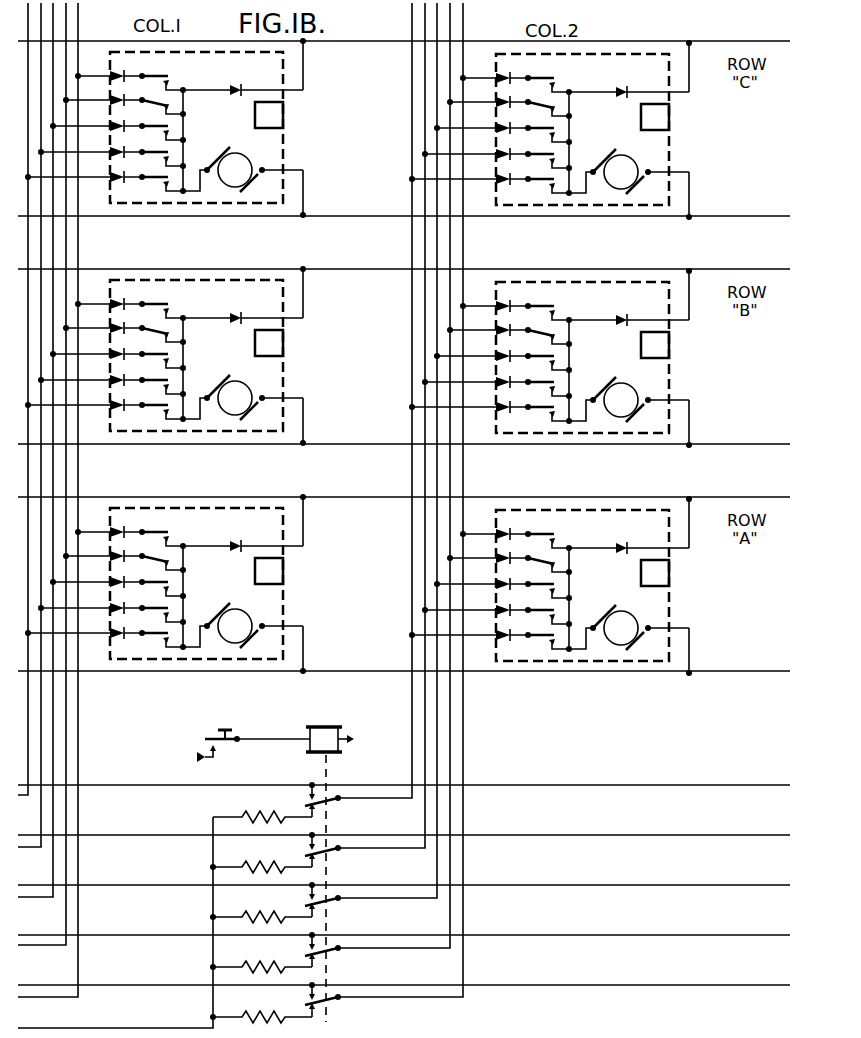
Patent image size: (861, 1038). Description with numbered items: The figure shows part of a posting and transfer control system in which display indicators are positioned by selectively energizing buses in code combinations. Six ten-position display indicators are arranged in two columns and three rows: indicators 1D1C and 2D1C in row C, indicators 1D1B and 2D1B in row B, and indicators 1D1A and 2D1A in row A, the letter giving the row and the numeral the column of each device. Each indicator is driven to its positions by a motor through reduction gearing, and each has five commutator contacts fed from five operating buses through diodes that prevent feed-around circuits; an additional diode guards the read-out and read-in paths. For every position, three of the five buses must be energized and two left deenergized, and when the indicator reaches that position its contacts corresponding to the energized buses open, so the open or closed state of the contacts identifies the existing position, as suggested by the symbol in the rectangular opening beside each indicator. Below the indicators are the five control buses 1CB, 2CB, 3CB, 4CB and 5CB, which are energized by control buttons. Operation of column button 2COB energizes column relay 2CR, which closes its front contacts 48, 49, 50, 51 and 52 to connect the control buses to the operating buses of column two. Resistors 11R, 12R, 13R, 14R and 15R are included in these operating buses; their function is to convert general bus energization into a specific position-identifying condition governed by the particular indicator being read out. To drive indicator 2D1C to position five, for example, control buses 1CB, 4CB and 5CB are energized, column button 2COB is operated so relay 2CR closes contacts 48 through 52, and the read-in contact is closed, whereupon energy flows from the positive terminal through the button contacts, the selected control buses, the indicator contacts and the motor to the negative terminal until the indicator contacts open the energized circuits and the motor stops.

The display indicator 1D1C is at (173, 88).
The display indicator 2D1C is at (564, 130).
The display indicator 1D1B is at (176, 356).
The display indicator 2D1B is at (564, 358).
The display indicator 1D1A is at (176, 584).
The display indicator 2D1A is at (564, 586).
The column button 2COB is at (232, 720).
The column relay 2CR is at (320, 735).
The resistor 11R is at (262, 1006).
The resistor 12R is at (262, 956).
The resistor 13R is at (262, 906).
The resistor 14R is at (262, 856).
The resistor 15R is at (262, 806).
The front contact 48 is at (328, 1002).
The front contact 49 is at (328, 953).
The front contact 50 is at (328, 903).
The front contact 51 is at (328, 853).
The front contact 52 is at (328, 803).
The control bus 1CB is at (682, 988).
The control bus 2CB is at (682, 938).
The control bus 3CB is at (682, 888).
The control bus 4CB is at (682, 838).
The control bus 5CB is at (682, 788).